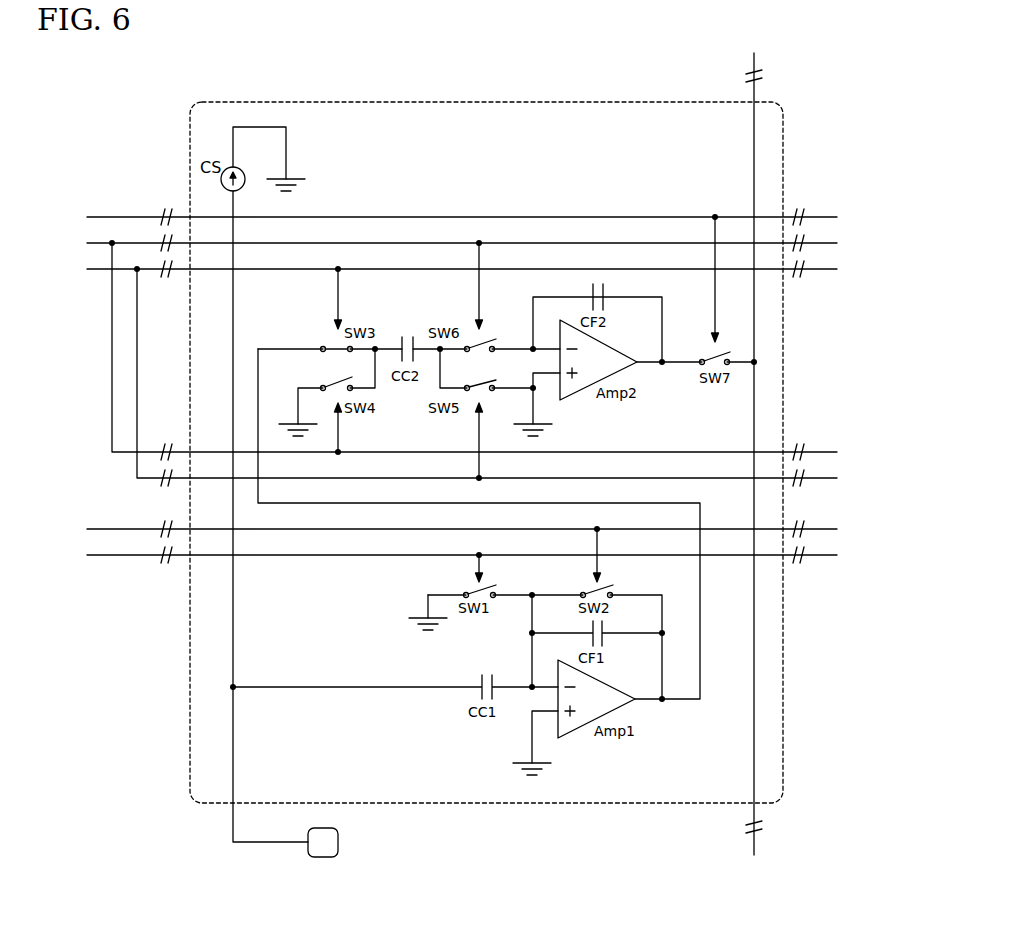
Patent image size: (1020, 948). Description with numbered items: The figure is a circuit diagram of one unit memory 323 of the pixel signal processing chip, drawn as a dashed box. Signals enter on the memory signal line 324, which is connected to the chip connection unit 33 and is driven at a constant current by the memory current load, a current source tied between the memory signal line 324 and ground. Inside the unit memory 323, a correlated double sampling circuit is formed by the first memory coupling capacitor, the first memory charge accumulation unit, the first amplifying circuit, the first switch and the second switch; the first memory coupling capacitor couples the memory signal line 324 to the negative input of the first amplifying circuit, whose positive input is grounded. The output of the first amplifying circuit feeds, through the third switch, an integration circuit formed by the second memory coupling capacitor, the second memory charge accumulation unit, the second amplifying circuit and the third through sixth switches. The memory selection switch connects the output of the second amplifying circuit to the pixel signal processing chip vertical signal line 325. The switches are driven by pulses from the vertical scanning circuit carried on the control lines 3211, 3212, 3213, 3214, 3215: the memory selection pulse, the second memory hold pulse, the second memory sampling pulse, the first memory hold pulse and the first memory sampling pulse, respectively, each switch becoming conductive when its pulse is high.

The unit memory 323 is at (346, 101).
The control signal line ΦMS 3211 is at (812, 220).
The control signal line ΦMH2 3212 is at (812, 246).
The control signal line ΦMSa2 3213 is at (812, 272).
The control signal line ΦMH1 3214 is at (812, 527).
The control signal line ΦMSa1 3215 is at (812, 553).
The memory signal line 324 is at (233, 822).
The pixel signal processing chip vertical signal line 325 is at (758, 840).
The chip connection unit 33 is at (323, 858).